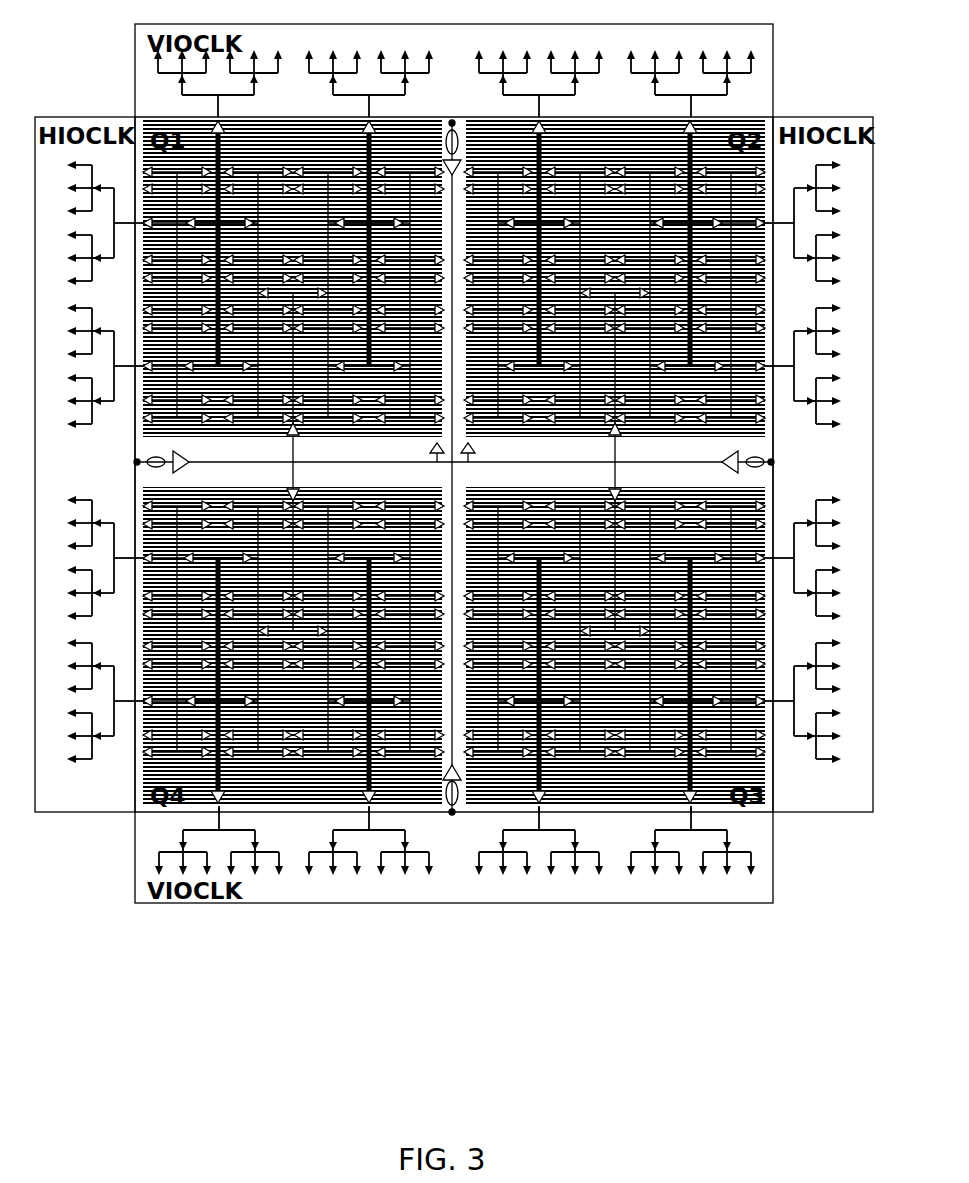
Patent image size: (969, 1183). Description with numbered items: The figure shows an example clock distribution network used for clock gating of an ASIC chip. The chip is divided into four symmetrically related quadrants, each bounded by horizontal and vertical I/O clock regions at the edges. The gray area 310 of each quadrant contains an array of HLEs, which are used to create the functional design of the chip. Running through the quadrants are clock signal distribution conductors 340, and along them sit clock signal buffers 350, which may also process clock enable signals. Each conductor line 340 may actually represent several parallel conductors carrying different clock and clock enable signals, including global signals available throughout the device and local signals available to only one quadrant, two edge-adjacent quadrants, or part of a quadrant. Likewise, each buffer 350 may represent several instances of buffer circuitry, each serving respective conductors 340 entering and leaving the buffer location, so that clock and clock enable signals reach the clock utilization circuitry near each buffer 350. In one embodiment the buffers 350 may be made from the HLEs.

The gray area 310 is at (312, 150).
The clock signal distribution conductors 340 is at (217, 587).
The clock signal buffers 350 is at (673, 363).